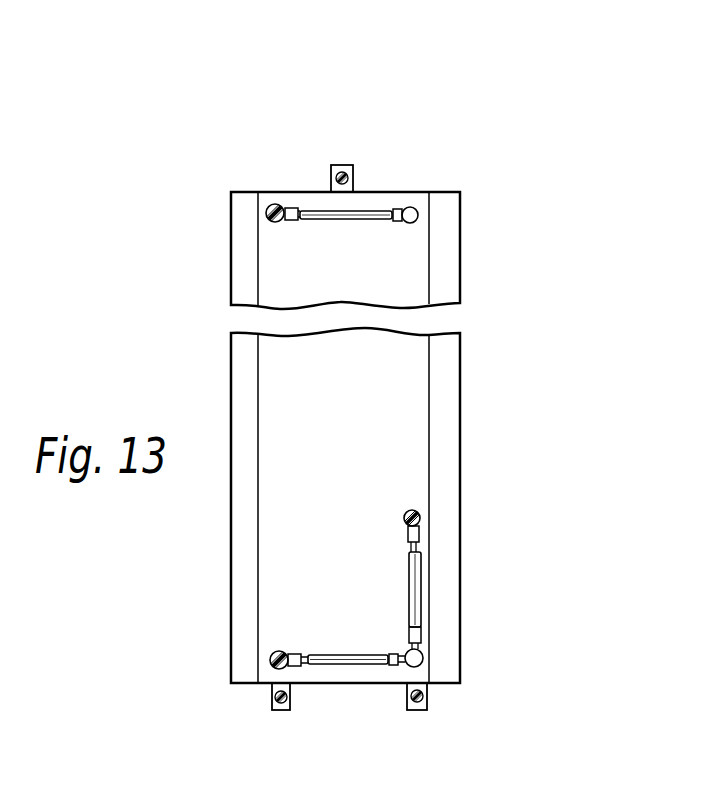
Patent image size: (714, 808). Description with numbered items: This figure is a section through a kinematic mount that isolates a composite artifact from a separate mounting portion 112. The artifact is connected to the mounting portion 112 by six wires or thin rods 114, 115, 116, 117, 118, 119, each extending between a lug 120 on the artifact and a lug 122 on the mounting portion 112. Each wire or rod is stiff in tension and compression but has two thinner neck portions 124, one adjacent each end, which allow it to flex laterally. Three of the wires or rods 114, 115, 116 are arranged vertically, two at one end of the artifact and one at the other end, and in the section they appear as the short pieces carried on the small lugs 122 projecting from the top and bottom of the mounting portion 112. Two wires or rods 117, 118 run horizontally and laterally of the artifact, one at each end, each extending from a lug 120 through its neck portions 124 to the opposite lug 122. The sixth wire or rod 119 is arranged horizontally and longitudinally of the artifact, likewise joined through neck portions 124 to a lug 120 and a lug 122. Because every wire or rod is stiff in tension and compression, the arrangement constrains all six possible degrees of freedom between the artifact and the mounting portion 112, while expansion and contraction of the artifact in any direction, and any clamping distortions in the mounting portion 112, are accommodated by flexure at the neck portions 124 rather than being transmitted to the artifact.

The mounting portion 112 is at (231, 369).
The wire or rod 114 is at (272, 705).
The wire or rod 115 is at (428, 703).
The wire or rod 116 is at (334, 178).
The wire or rod 117 is at (335, 668).
The wire or rod 118 is at (345, 222).
The wire or rod 119 is at (420, 580).
The lug 120 is at (266, 213).
The lug 122 is at (354, 178).
The neck portion 124 is at (298, 222).